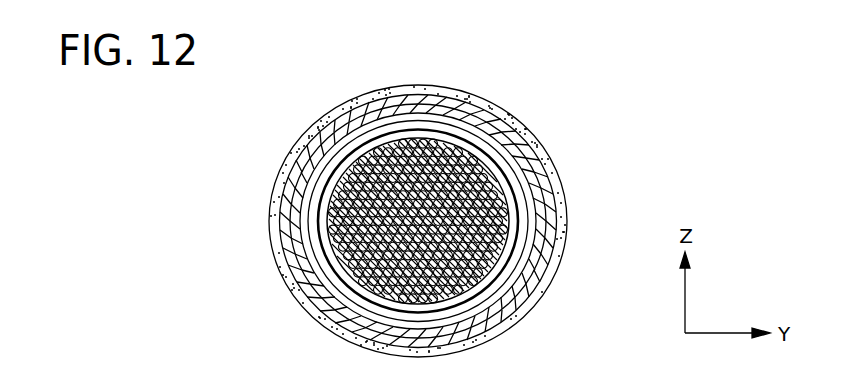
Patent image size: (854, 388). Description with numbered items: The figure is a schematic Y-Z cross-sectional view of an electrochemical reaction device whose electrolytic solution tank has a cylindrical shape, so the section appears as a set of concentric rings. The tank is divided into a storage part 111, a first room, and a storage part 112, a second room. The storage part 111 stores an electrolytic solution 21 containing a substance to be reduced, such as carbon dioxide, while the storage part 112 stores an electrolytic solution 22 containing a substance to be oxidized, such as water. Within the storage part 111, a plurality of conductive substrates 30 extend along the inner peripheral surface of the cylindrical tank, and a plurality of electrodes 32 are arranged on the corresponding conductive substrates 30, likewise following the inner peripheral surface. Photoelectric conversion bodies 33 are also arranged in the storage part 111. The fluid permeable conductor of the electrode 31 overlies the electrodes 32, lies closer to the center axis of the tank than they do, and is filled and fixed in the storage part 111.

The electrolytic solution 21 is at (413, 135).
The electrolytic solution 22 is at (480, 92).
The electrode 31 is at (512, 195).
The conductive substrates 30 is at (534, 175).
The photoelectric conversion bodies 33 is at (545, 205).
The electrodes 32 is at (568, 240).
The storage part 111 is at (304, 184).
The storage part 112 is at (350, 100).